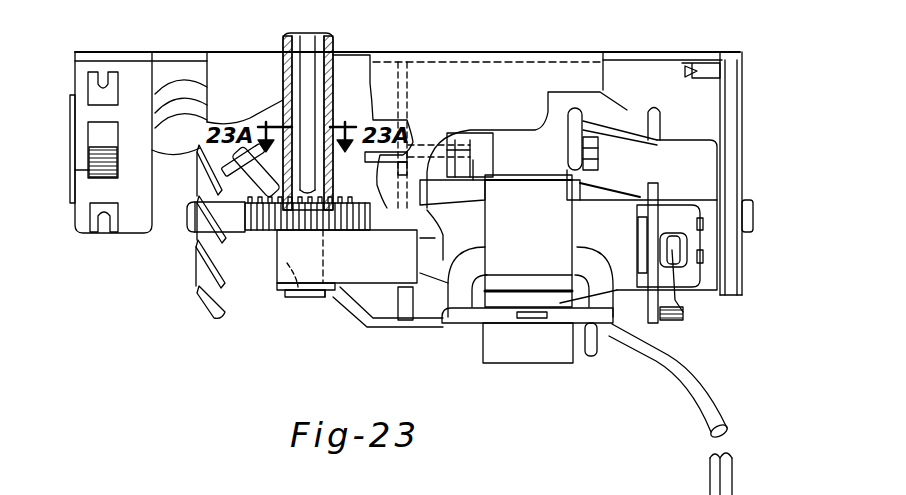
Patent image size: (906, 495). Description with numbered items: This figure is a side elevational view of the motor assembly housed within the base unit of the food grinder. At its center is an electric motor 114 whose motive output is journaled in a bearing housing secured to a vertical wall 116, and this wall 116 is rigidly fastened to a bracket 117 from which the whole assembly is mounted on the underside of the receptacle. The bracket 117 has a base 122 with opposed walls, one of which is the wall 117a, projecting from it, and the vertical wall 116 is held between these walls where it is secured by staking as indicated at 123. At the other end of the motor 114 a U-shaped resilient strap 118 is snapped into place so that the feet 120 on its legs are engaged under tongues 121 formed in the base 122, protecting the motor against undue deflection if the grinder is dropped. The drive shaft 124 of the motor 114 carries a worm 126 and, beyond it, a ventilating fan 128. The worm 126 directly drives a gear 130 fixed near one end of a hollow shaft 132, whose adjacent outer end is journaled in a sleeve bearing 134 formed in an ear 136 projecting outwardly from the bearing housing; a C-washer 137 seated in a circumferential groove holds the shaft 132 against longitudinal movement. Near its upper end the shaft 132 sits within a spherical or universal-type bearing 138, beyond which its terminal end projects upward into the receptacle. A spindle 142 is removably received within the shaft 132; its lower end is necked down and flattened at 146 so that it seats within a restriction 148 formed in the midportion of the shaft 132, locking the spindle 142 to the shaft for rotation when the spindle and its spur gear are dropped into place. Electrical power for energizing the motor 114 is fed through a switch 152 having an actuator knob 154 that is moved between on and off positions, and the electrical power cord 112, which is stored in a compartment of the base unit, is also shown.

The electrical power cord 112 is at (697, 378).
The electric motor 114 is at (505, 125).
The vertical wall 116 is at (413, 322).
The bracket 117 is at (466, 50).
The opposed wall of bracket 117a is at (548, 66).
The U-shaped resilient strap 118 is at (742, 253).
The feet 120 is at (700, 70).
The tongues 121 is at (740, 38).
The base of bracket 122 is at (630, 60).
The staking 123 is at (428, 175).
The drive shaft 124 is at (235, 218).
The worm 126 is at (343, 203).
The ventilating fan 128 is at (205, 312).
The gear 130 is at (320, 236).
The hollow shaft 132 is at (322, 292).
The sleeve bearing 134 is at (300, 297).
The ear 136 is at (334, 300).
The C-washer 137 is at (287, 290).
The spherical or universal-type bearing 138 is at (332, 52).
The spindle 142 is at (400, 76).
The necked down and flattened portion 146 is at (223, 197).
The restriction 148 is at (316, 130).
The switch 152 is at (88, 150).
The actuator knob 154 is at (72, 170).